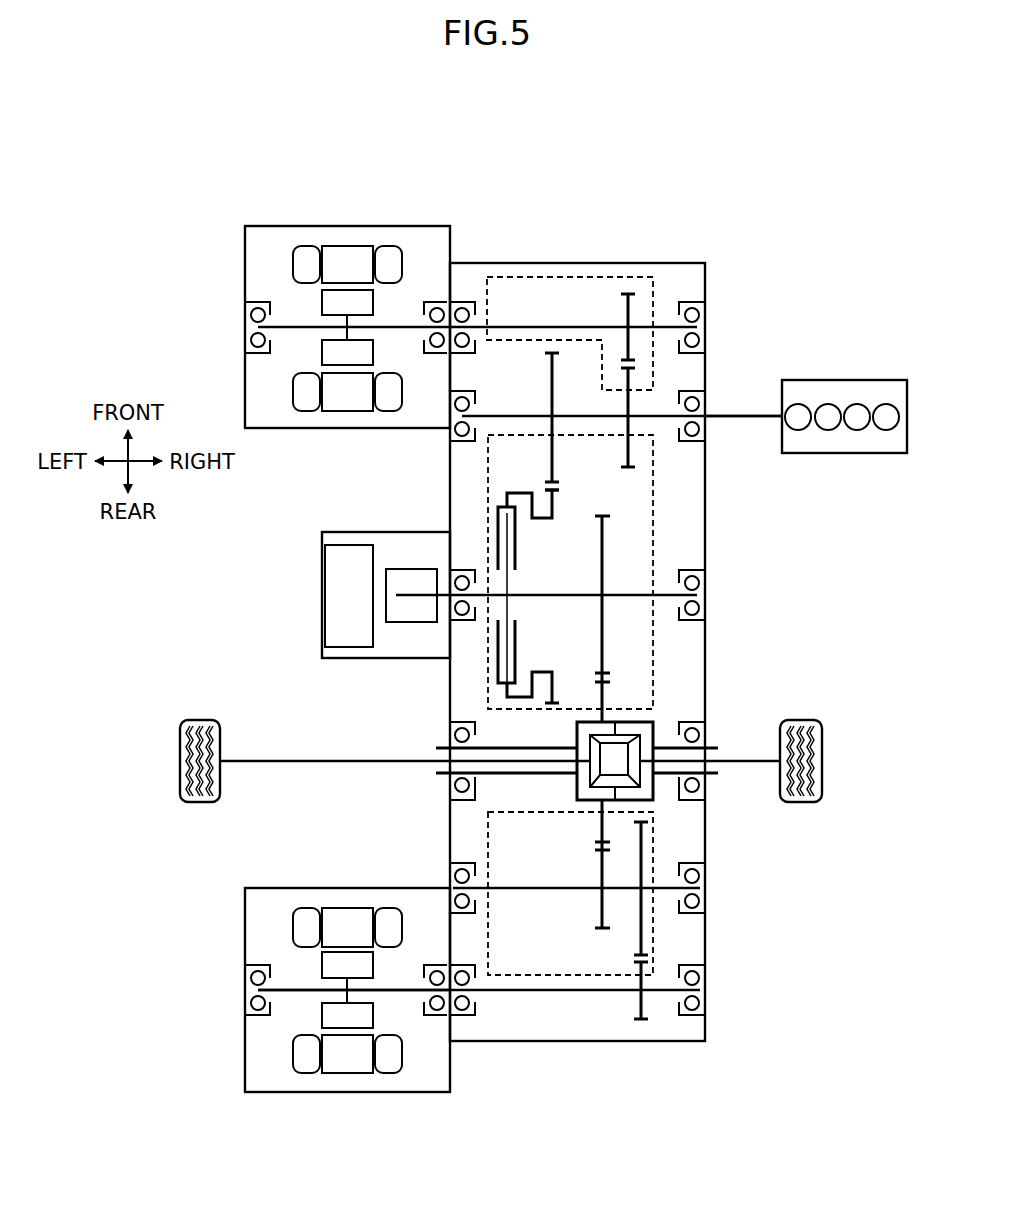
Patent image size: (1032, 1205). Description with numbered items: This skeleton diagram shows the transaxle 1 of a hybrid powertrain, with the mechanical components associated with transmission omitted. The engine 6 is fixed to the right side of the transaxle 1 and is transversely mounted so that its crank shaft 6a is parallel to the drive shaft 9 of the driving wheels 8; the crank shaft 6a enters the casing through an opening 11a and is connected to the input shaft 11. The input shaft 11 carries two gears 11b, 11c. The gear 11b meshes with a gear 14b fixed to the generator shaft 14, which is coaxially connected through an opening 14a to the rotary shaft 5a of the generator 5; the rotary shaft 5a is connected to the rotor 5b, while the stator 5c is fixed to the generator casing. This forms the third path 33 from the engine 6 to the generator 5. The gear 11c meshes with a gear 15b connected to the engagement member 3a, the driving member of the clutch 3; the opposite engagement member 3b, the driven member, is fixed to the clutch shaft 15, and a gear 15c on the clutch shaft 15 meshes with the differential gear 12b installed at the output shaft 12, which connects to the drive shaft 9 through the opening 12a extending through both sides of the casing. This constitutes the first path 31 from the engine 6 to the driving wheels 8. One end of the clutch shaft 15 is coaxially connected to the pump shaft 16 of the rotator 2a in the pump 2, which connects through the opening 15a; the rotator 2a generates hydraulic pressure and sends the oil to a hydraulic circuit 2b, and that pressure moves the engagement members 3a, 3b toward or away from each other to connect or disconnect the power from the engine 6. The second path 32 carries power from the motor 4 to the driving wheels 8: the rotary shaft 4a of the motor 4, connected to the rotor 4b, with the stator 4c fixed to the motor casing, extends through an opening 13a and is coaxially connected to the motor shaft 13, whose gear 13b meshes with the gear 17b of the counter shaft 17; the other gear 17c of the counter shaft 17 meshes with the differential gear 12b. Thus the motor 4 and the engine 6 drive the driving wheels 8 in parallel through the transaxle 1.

The transaxle 1 is at (546, 263).
The pump 2 is at (350, 570).
The rotator 2a is at (322, 593).
The hydraulic circuit 2b is at (398, 569).
The clutch 3 is at (492, 596).
The engagement member 3a is at (516, 540).
The engagement member 3b is at (508, 579).
The motor 4 is at (321, 1014).
The rotary shaft 4a is at (405, 990).
The rotor 4b is at (375, 1015).
The stator 4c is at (345, 1075).
The generator 5 is at (445, 322).
The rotary shaft 5a is at (403, 327).
The rotor 5b is at (375, 302).
The stator 5c is at (347, 246).
The engine 6 is at (845, 380).
The crank shaft 6a is at (748, 416).
The driving wheels 8 is at (180, 773).
The drive shaft 9 is at (305, 762).
The input shaft 11 is at (577, 416).
The opening 11a is at (705, 422).
The gear 11b is at (622, 455).
The gear 11c is at (548, 378).
The output shaft 12 is at (600, 746).
The opening 12a is at (448, 782).
The differential gear 12b is at (674, 711).
The motor shaft 13 is at (542, 992).
The opening 13a is at (437, 976).
The gear 13b is at (641, 1010).
The generator shaft 14 is at (499, 327).
The opening 14a is at (437, 345).
The gear 14b is at (622, 306).
The clutch shaft 15 is at (630, 597).
The opening 15a is at (452, 610).
The gear 15b is at (556, 493).
The gear 15c is at (600, 628).
The pump shaft 16 is at (403, 597).
The counter shaft 17 is at (524, 888).
The gear 17b is at (640, 945).
The gear 17c is at (600, 912).
The first path 31 is at (653, 524).
The second path 32 is at (653, 933).
The third path 33 is at (653, 284).